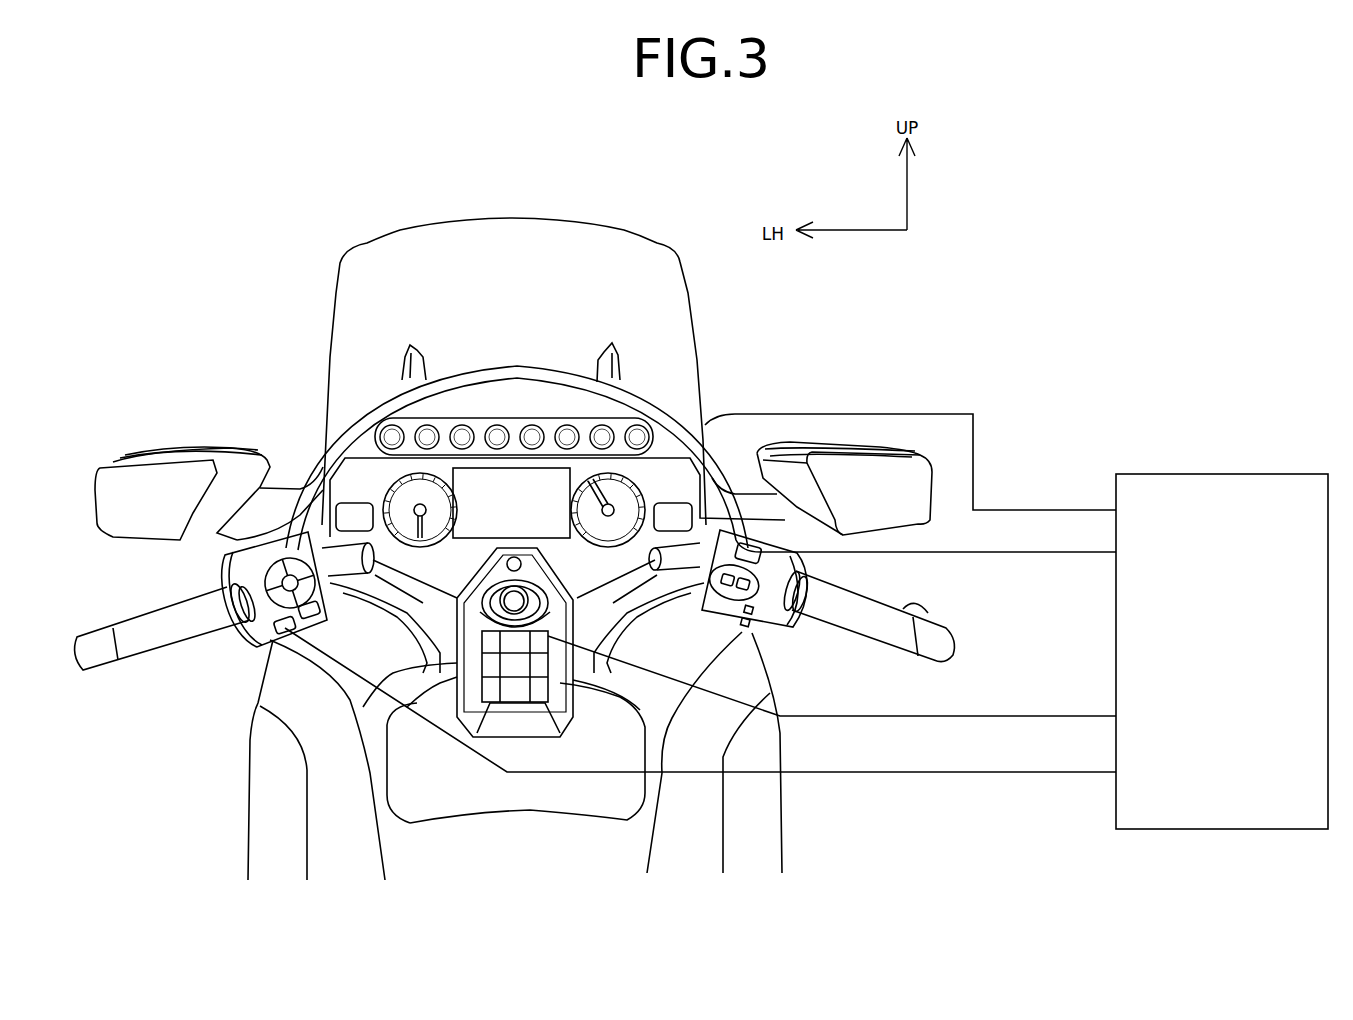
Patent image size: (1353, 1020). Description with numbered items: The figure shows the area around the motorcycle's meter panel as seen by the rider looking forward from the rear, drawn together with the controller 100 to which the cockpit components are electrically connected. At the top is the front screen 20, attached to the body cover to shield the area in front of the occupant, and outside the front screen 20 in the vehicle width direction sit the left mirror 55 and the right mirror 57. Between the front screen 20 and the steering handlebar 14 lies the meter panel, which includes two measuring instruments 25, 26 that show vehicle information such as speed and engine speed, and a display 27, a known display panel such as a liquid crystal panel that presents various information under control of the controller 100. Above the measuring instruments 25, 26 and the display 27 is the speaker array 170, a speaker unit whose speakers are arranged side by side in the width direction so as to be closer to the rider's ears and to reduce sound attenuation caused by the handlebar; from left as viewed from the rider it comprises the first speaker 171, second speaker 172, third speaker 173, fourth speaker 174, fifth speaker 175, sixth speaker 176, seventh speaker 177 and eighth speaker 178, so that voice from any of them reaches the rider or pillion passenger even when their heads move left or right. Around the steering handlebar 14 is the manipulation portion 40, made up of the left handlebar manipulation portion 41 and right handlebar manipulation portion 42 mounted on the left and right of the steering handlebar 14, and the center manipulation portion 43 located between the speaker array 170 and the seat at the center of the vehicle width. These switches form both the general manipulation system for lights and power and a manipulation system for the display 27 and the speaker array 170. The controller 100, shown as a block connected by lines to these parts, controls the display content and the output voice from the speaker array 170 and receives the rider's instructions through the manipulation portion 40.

The steering handlebar 14 is at (934, 616).
The front screen 20 is at (464, 219).
The measuring instrument 25 is at (383, 490).
The measuring instrument 26 is at (640, 478).
The display 27 is at (541, 528).
The manipulation portion 40 is at (605, 750).
The left handlebar manipulation portion 41 is at (256, 645).
The right handlebar manipulation portion 42 is at (790, 630).
The center manipulation portion 43 is at (475, 663).
The left mirror 55 is at (150, 462).
The right mirror 57 is at (910, 503).
The controller 100 is at (1160, 474).
The speaker array 170 is at (446, 405).
The first speaker 171 is at (378, 432).
The second speaker 172 is at (415, 428).
The third speaker 173 is at (463, 425).
The fourth speaker 174 is at (499, 425).
The fifth speaker 175 is at (535, 425).
The sixth speaker 176 is at (570, 425).
The seventh speaker 177 is at (606, 425).
The eighth speaker 178 is at (645, 428).